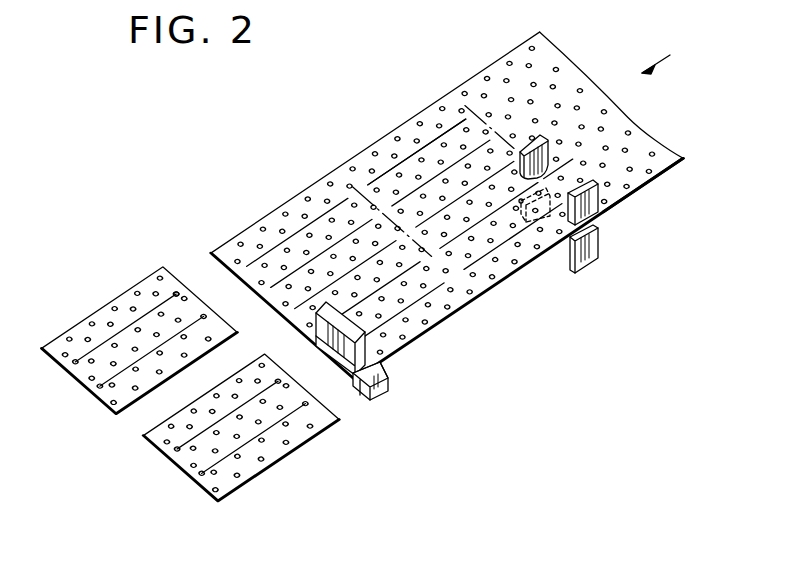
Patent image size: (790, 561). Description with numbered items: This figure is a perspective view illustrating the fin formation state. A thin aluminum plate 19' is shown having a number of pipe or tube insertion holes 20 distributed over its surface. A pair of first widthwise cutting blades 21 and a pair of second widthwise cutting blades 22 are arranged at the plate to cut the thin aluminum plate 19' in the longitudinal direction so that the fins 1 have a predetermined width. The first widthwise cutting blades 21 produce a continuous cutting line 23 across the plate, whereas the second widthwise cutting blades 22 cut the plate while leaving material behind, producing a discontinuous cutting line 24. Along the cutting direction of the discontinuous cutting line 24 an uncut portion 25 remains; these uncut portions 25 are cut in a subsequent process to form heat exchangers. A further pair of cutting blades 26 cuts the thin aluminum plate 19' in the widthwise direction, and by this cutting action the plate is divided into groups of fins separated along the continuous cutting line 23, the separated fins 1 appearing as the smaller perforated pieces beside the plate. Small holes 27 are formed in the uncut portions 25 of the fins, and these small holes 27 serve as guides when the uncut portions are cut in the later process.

The fin 1 is at (53, 343).
The thin aluminum plate 19' is at (465, 205).
The pipe or tube insertion holes 20 is at (613, 183).
The first widthwise cutting blades 21 is at (598, 220).
The second widthwise cutting blades 22 is at (546, 143).
The continuous cutting line 23 is at (473, 188).
The discontinuous cutting line 24 is at (417, 148).
The uncut portion 25 is at (478, 323).
The cutting blades 26 is at (348, 368).
The small holes 27 is at (177, 291).